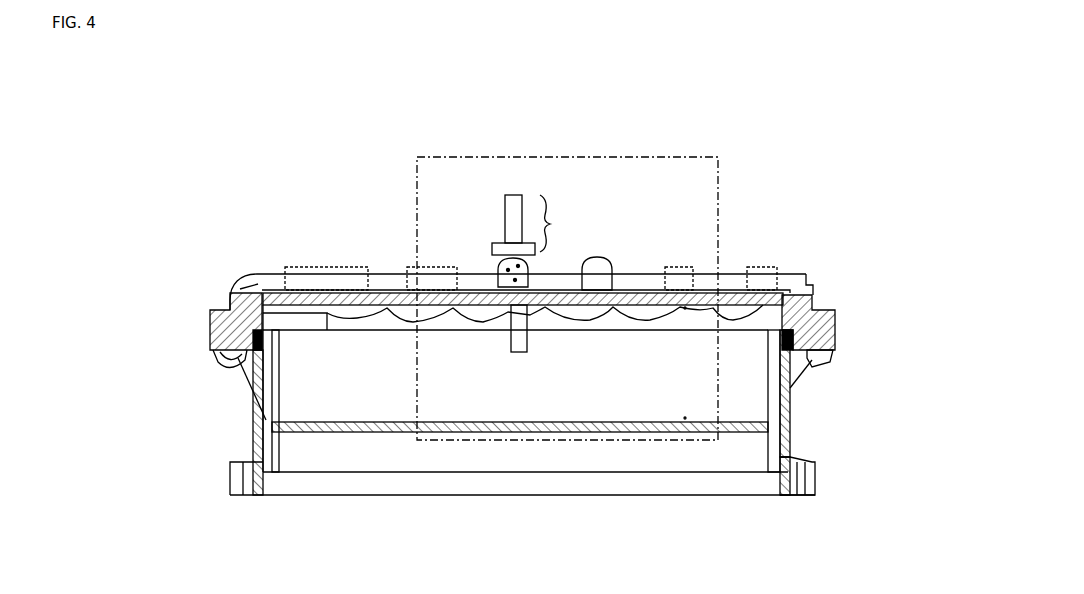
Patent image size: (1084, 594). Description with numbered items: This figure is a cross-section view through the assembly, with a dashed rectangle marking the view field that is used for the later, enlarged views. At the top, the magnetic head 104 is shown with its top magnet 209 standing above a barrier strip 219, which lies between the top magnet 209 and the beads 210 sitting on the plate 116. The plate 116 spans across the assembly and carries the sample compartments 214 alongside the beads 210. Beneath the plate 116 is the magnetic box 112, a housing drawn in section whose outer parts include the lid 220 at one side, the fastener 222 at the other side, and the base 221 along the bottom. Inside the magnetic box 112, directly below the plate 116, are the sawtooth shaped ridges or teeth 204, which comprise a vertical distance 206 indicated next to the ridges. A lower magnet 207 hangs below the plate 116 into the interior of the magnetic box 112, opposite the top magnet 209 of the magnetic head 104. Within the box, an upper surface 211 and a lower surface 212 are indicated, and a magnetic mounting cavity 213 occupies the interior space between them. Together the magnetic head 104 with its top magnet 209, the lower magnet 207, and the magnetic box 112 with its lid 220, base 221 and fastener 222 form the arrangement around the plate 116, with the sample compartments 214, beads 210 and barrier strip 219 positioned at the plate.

The magnetic head 104 is at (561, 223).
The magnetic box 112 is at (182, 302).
The plate 116 is at (812, 272).
The sawtooth ridges or teeth 204 is at (393, 312).
The vertical distance 206 is at (563, 312).
The lower magnet 207 is at (518, 342).
The top magnet 209 is at (505, 217).
The beads 210 is at (500, 268).
The upper surface 211 is at (685, 307).
The lower surface 212 is at (685, 417).
The magnetic mounting cavity 213 is at (655, 372).
The sample compartments 214 is at (595, 278).
The barrier strip 219 is at (493, 245).
The lid 220 is at (845, 325).
The base 221 is at (818, 472).
The fastener 222 is at (233, 372).